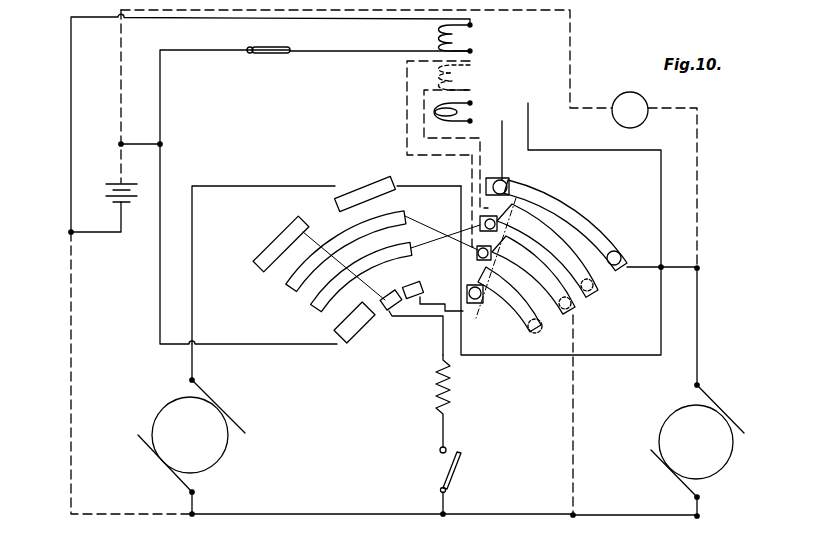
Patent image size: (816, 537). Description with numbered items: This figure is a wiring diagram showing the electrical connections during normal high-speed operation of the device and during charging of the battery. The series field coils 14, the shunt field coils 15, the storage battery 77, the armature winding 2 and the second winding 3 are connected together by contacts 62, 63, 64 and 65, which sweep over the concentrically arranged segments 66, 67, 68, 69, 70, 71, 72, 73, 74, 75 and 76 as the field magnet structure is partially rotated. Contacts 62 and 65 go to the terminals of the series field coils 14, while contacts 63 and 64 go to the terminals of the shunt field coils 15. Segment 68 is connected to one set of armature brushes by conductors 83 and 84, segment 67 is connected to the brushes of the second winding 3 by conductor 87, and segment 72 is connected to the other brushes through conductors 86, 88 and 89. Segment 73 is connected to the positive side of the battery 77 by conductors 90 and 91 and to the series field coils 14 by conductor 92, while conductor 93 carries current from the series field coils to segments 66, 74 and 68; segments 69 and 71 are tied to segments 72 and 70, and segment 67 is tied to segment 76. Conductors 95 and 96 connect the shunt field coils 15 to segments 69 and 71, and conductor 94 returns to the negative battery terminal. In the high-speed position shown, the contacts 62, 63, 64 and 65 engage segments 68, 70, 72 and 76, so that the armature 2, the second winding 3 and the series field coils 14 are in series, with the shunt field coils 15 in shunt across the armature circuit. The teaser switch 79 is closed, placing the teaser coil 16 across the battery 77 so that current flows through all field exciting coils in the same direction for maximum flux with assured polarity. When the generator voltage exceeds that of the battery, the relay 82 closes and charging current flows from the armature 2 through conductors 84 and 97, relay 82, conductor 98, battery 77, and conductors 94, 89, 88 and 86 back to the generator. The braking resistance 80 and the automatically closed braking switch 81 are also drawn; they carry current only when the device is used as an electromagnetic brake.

The armature winding 2 is at (697, 450).
The second winding 3 is at (191, 429).
The series field coils 14 is at (454, 112).
The shunt field coils 15 is at (456, 77).
The teaser coil 16 is at (456, 38).
The contact 62 is at (509, 185).
The contact 63 is at (492, 219).
The contact 64 is at (489, 245).
The contact 65 is at (478, 283).
The segment 66 is at (288, 236).
The segment 67 is at (378, 182).
The segment 68 is at (568, 214).
The segment 69 is at (285, 290).
The segment 70 is at (560, 250).
The segment 71 is at (316, 310).
The segment 72 is at (545, 272).
The segment 73 is at (337, 335).
The segment 74 is at (391, 297).
The segment 75 is at (421, 291).
The segment 76 is at (525, 308).
The storage battery 77 is at (131, 210).
The teaser switch 79 is at (272, 55).
The braking resistance 80 is at (452, 406).
The braking switch 81 is at (452, 480).
The relay 82 is at (630, 110).
The conductor 83 is at (638, 265).
The conductor 84 is at (697, 340).
The conductor 86 is at (641, 513).
The conductor 87 is at (192, 272).
The conductor 88 is at (520, 512).
The conductor 89 is at (325, 512).
The conductor 90 is at (152, 143).
The conductor 91 is at (160, 240).
The conductor 92 is at (538, 357).
The conductor 93 is at (514, 150).
The conductor 94 is at (78, 365).
The conductor 95 is at (424, 136).
The conductor 96 is at (407, 98).
The conductor 97 is at (697, 218).
The conductor 98 is at (570, 62).